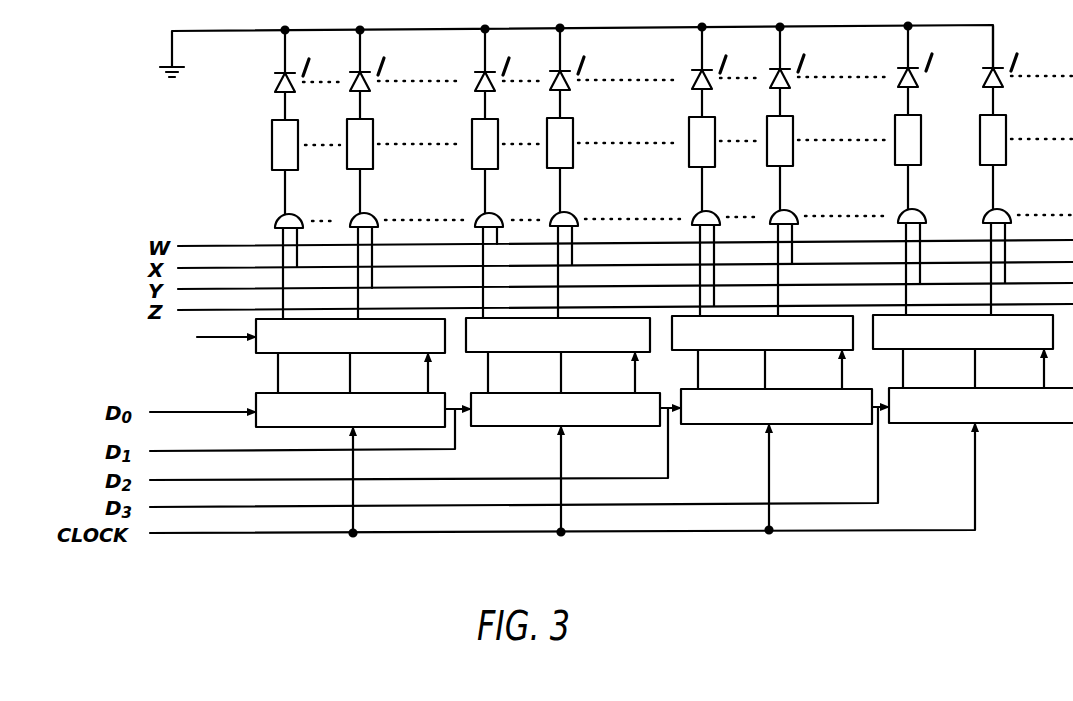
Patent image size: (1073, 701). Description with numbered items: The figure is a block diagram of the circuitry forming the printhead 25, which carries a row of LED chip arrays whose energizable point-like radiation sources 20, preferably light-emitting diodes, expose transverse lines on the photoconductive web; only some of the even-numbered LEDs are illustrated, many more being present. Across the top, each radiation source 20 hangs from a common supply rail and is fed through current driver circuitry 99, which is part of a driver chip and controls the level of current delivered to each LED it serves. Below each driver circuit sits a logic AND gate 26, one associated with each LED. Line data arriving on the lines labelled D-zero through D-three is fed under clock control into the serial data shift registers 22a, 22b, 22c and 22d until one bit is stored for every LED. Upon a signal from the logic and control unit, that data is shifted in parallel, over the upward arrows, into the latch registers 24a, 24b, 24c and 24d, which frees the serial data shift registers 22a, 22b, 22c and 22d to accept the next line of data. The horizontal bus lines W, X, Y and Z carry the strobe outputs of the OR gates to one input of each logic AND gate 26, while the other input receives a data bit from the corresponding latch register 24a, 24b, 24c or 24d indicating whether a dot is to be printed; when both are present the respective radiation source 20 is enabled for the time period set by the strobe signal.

The energizable point-like radiation sources 20 is at (276, 85).
The current driver circuitry 99 is at (272, 165).
The logic AND gate 26 is at (351, 213).
The printhead 25 is at (121, 206).
The latch register 24a is at (257, 354).
The latch register 24b is at (547, 353).
The latch register 24c is at (753, 351).
The latch register 24d is at (960, 350).
The serial data shift register 22a is at (256, 397).
The serial data shift register 22b is at (528, 427).
The serial data shift register 22c is at (745, 425).
The serial data shift register 22d is at (949, 423).